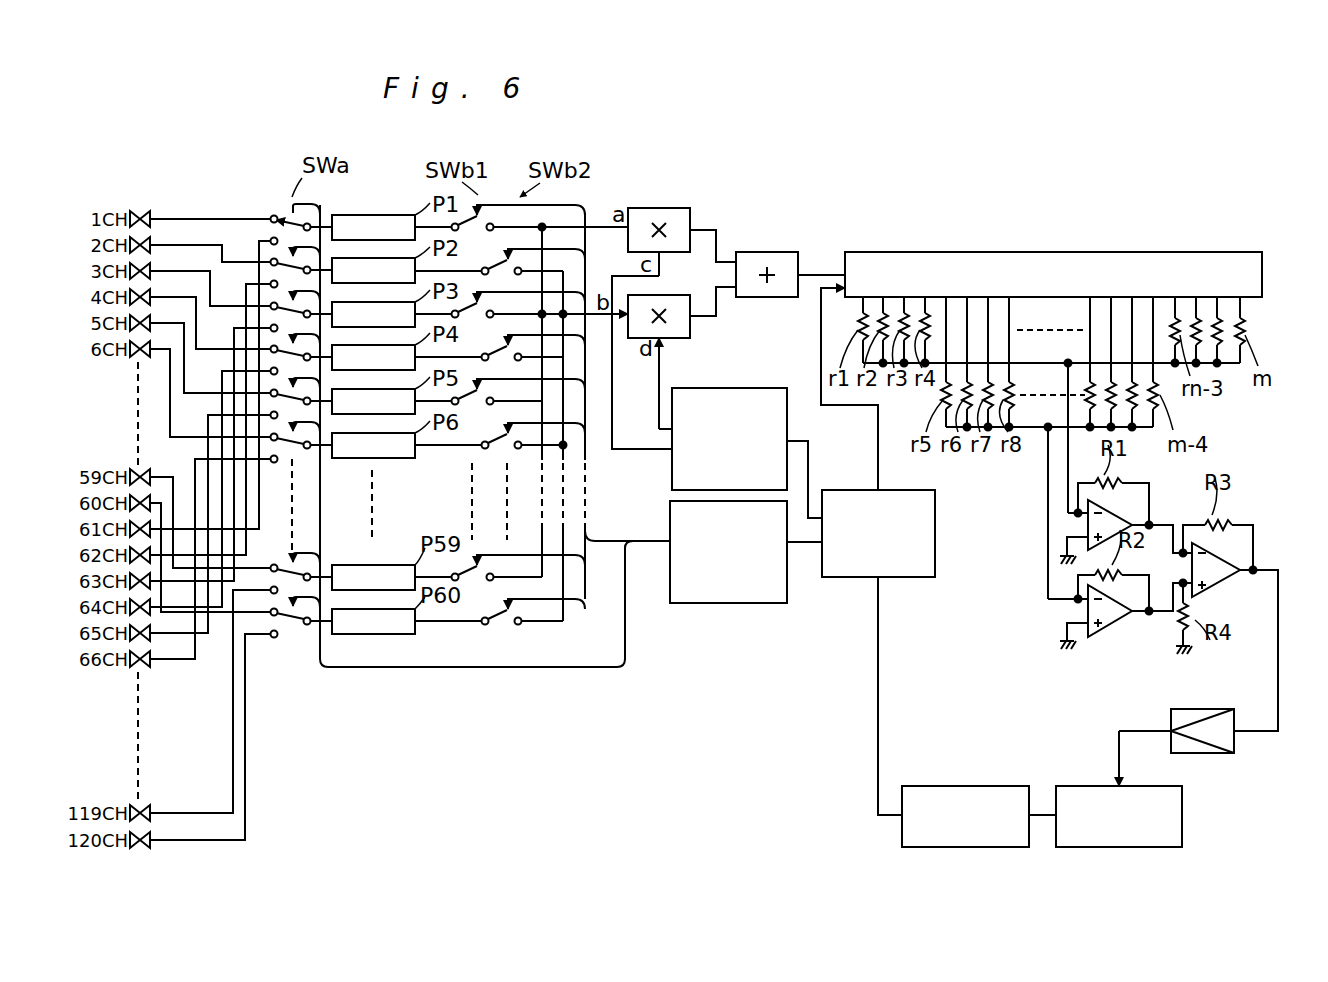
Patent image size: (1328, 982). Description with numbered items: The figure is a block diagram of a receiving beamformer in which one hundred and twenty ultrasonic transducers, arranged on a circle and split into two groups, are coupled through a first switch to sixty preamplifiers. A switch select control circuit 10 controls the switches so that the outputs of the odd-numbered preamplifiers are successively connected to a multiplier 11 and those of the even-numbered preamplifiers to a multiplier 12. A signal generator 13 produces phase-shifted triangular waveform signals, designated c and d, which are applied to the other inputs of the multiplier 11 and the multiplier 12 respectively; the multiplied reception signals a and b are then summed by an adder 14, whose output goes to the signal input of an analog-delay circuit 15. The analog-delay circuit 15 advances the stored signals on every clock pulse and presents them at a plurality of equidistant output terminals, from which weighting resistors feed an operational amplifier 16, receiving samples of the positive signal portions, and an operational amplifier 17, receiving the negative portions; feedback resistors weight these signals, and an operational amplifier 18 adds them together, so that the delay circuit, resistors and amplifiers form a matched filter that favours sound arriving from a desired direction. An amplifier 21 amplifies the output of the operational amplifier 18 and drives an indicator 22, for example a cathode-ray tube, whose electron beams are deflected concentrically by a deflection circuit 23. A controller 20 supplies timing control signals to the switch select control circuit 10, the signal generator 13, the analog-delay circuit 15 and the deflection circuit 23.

The switch select control circuit 10 is at (780, 603).
The multiplier 11 is at (690, 208).
The multiplier 12 is at (690, 338).
The signal generator 13 is at (787, 388).
The adder 14 is at (798, 252).
The analog-delay circuit 15 is at (1262, 252).
The operational amplifier 16 is at (1120, 488).
The operational amplifier 17 is at (1120, 576).
The operational amplifier 18 is at (1224, 529).
The controller 20 is at (935, 497).
The amplifier 21 is at (1228, 709).
The indicator 22 is at (1147, 786).
The deflection circuit 23 is at (1009, 786).